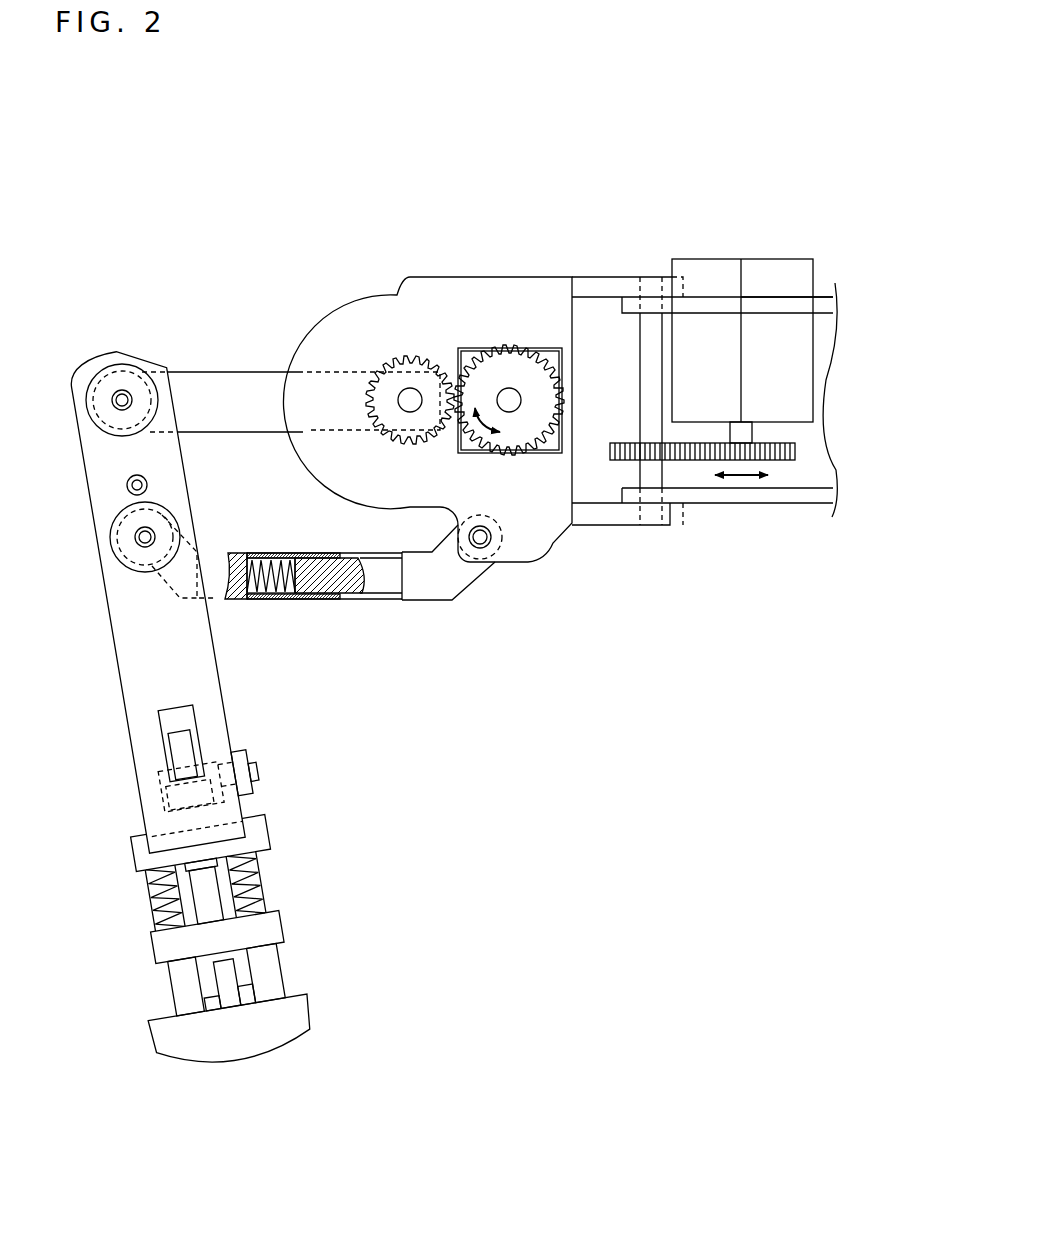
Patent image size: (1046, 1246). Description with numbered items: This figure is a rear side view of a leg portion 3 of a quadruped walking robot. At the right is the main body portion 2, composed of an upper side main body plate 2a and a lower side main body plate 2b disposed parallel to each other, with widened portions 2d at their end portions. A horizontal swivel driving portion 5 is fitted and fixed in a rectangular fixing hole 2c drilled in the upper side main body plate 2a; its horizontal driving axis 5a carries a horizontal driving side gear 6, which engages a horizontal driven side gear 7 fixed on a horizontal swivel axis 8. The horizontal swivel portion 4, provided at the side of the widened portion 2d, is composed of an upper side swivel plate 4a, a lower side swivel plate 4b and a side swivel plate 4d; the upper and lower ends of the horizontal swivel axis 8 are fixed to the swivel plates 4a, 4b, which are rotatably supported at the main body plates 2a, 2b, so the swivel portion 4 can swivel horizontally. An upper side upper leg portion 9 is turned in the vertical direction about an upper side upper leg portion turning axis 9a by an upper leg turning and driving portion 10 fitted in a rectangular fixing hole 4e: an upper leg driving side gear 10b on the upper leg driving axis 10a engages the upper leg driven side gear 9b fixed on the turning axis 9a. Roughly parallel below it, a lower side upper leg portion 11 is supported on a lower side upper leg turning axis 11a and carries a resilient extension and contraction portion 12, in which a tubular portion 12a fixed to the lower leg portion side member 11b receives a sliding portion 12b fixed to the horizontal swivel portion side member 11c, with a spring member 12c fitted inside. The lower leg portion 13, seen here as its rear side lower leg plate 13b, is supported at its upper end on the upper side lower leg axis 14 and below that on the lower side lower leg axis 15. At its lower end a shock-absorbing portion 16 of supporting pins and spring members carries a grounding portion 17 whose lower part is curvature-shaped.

The main body portion 2 is at (841, 254).
The upper side main body plate 2a is at (823, 297).
The lower side main body plate 2b is at (796, 503).
The rectangular fixing hole 2c is at (812, 298).
The widened portion 2d is at (632, 300).
The arm unit 3 is at (89, 278).
The horizontal swivel portion 4 is at (518, 243).
The upper side swivel plate 4a is at (596, 285).
The lower side swivel plate 4b is at (587, 517).
The side swivel plate 4d is at (427, 308).
The rectangular fixing hole 4e is at (549, 556).
The horizontal swivel driving portion 5 is at (687, 260).
The horizontal driving axis 5a is at (747, 432).
The horizontal driving side gear 6 is at (797, 451).
The horizontal driven side gear 7 is at (666, 455).
The horizontal swivel axis 8 is at (648, 348).
The upper side upper leg portion 9 is at (232, 392).
The upper side upper leg portion turning axis 9a is at (403, 396).
The upper leg driven side gear 9b is at (373, 427).
The upper leg turning and driving portion 10 is at (462, 350).
The upper leg driving axis 10a is at (510, 396).
The upper leg driving side gear 10b is at (503, 363).
The lower side upper leg portion 11 is at (468, 610).
The lower side upper leg turning axis 11a is at (481, 540).
The lower leg portion side member 11b is at (213, 570).
The horizontal swivel portion side member 11c is at (432, 592).
The resilient extension and contraction portion 12 is at (323, 632).
The tubular portion 12a is at (270, 595).
The sliding portion 12b is at (380, 587).
The spring member 12c is at (270, 558).
The lower leg portion 13 is at (134, 603).
The rear side lower leg plate 13b is at (147, 676).
The upper side lower leg axis 14 is at (120, 398).
The lower side lower leg axis 15 is at (143, 539).
The shock-absorbing portion 16 is at (265, 900).
The grounding portion 17 is at (288, 1020).